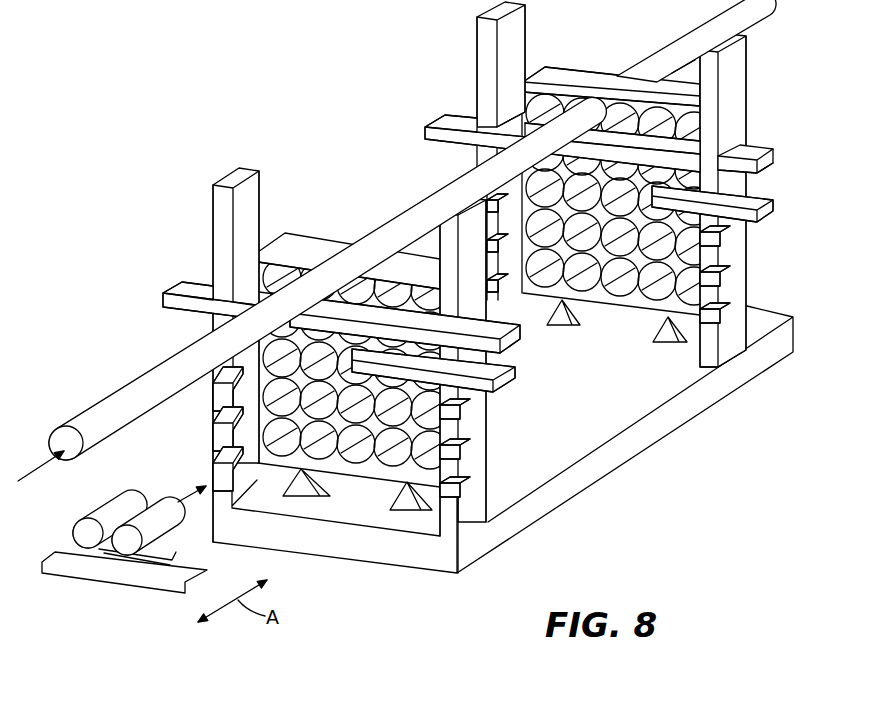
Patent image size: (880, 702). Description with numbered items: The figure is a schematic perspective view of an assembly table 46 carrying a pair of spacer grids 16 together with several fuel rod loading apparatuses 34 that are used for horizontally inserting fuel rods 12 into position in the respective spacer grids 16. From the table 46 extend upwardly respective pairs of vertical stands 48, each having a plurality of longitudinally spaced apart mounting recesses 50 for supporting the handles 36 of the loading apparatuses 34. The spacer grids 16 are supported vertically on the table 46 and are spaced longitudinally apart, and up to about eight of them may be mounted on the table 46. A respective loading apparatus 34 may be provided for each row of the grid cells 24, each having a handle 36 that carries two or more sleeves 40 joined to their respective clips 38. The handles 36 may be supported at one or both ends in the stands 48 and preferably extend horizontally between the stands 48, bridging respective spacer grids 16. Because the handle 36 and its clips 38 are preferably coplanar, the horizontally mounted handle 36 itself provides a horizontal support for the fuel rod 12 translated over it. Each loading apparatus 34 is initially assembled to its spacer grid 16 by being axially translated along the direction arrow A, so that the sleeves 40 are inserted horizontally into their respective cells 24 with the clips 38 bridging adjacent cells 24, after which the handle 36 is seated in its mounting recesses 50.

The fuel rod 12 is at (157, 378).
The spacer grid 16 is at (320, 242).
The grid cell 24 is at (386, 467).
The loading apparatus 34 is at (174, 286).
The handle 36 is at (378, 312).
The clip 38 is at (175, 553).
The sleeve 40 is at (97, 516).
The table 46 is at (657, 430).
The vertical stand 48 is at (246, 176).
The mounting recess 50 is at (466, 483).